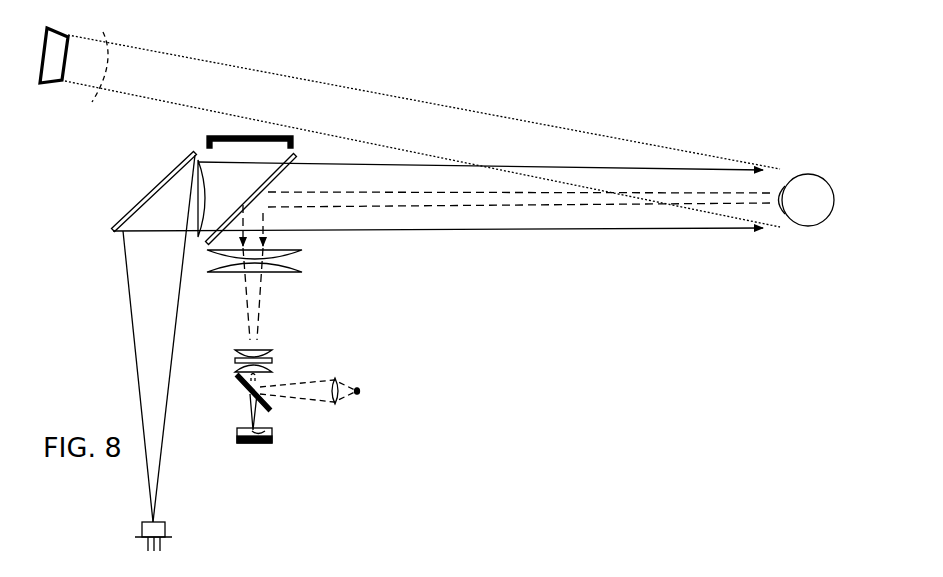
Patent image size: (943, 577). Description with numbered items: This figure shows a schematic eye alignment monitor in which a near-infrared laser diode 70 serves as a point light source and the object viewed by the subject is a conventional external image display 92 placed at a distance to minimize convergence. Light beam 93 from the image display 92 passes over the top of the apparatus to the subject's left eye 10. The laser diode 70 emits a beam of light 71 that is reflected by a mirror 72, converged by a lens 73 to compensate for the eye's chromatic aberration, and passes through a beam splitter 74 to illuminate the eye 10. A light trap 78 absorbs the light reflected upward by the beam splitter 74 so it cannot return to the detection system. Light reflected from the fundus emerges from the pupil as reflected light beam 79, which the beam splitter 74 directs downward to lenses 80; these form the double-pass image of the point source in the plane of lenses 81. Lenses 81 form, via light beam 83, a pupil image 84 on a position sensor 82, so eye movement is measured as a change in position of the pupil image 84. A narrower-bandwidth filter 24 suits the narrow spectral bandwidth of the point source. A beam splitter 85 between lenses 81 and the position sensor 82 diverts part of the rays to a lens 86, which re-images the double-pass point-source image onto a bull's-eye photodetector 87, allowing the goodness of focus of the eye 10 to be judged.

The left eye 10 is at (808, 227).
The narrower-bandwidth filter 24 is at (275, 361).
The near-infrared laser diode 70 is at (138, 528).
The beam of light 71 is at (158, 484).
The mirror 72 is at (160, 184).
The lens 73 is at (203, 239).
The beam splitter 74 is at (290, 157).
The light trap 78 is at (206, 140).
The reflected light beam 79 is at (692, 203).
The lenses 80 is at (303, 253).
The lenses 81 is at (233, 353).
The position sensor 82 is at (235, 433).
The light beam 83 is at (252, 407).
The pupil image 84 is at (268, 433).
The beam splitter 85 is at (233, 385).
The lens 86 is at (336, 405).
The bull's-eye photodetector 87 is at (362, 392).
The conventional external image display 92 is at (52, 93).
The light beam 93 is at (152, 92).